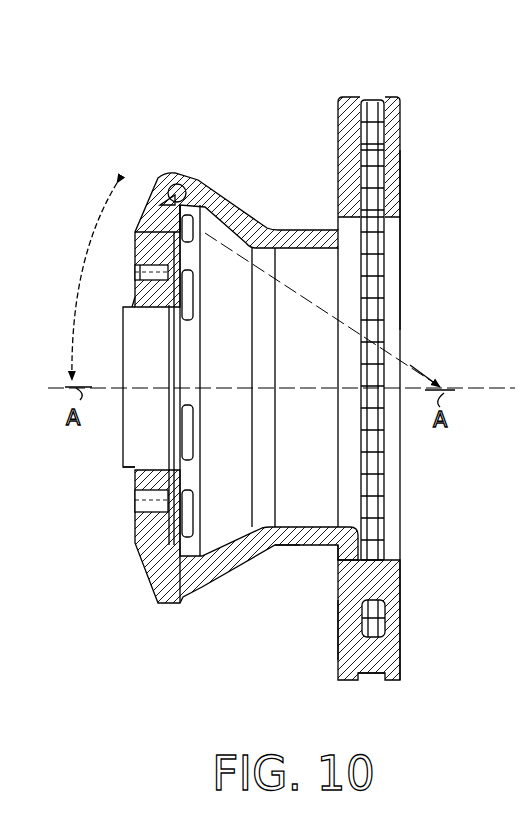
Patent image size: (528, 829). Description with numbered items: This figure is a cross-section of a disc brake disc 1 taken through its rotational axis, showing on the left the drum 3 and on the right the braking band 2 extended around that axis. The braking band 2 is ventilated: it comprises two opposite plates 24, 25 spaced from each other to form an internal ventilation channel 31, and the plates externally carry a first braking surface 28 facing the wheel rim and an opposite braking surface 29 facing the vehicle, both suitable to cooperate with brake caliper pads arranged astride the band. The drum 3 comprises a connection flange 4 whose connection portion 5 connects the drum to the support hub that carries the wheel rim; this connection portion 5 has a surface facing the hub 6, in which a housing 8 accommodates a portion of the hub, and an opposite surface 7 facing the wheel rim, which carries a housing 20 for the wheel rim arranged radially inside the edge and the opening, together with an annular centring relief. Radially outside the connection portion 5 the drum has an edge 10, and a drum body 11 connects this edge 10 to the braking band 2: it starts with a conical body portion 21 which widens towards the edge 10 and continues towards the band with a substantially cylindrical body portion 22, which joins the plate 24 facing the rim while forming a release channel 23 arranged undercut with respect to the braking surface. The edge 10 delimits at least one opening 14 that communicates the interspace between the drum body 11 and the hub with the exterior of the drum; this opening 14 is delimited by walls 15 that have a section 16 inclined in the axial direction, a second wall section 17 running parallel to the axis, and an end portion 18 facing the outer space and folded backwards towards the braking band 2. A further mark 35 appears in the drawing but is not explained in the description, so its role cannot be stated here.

The disc brake disc 1 is at (450, 157).
The braking band 2 is at (338, 130).
The drum 3 is at (287, 232).
The connection flange 4 is at (135, 272).
The connection portion 5 is at (120, 303).
The surface facing the hub 6 is at (172, 340).
The opposite surface facing the wheel rim 7 is at (134, 492).
The housing 8 is at (198, 580).
The edge 10 is at (165, 178).
The drum body 11 is at (282, 548).
The opening 14 is at (125, 169).
The walls 15 is at (150, 232).
The inclined wall section 16 is at (192, 187).
The second wall section 17 is at (135, 230).
The end portion 18 is at (172, 177).
The housing for the wheel rim 20 is at (133, 290).
The conical body portion 21 is at (228, 230).
The cylindrical body portion 22 is at (310, 230).
The release channel 23 is at (337, 553).
The plate facing the wheel rim 24 is at (337, 677).
The plate facing the vehicle 25 is at (402, 660).
The first braking surface 28 is at (337, 637).
The opposite braking surface 29 is at (402, 603).
The internal ventilation channel 31 is at (400, 243).
The step 35 is at (123, 467).